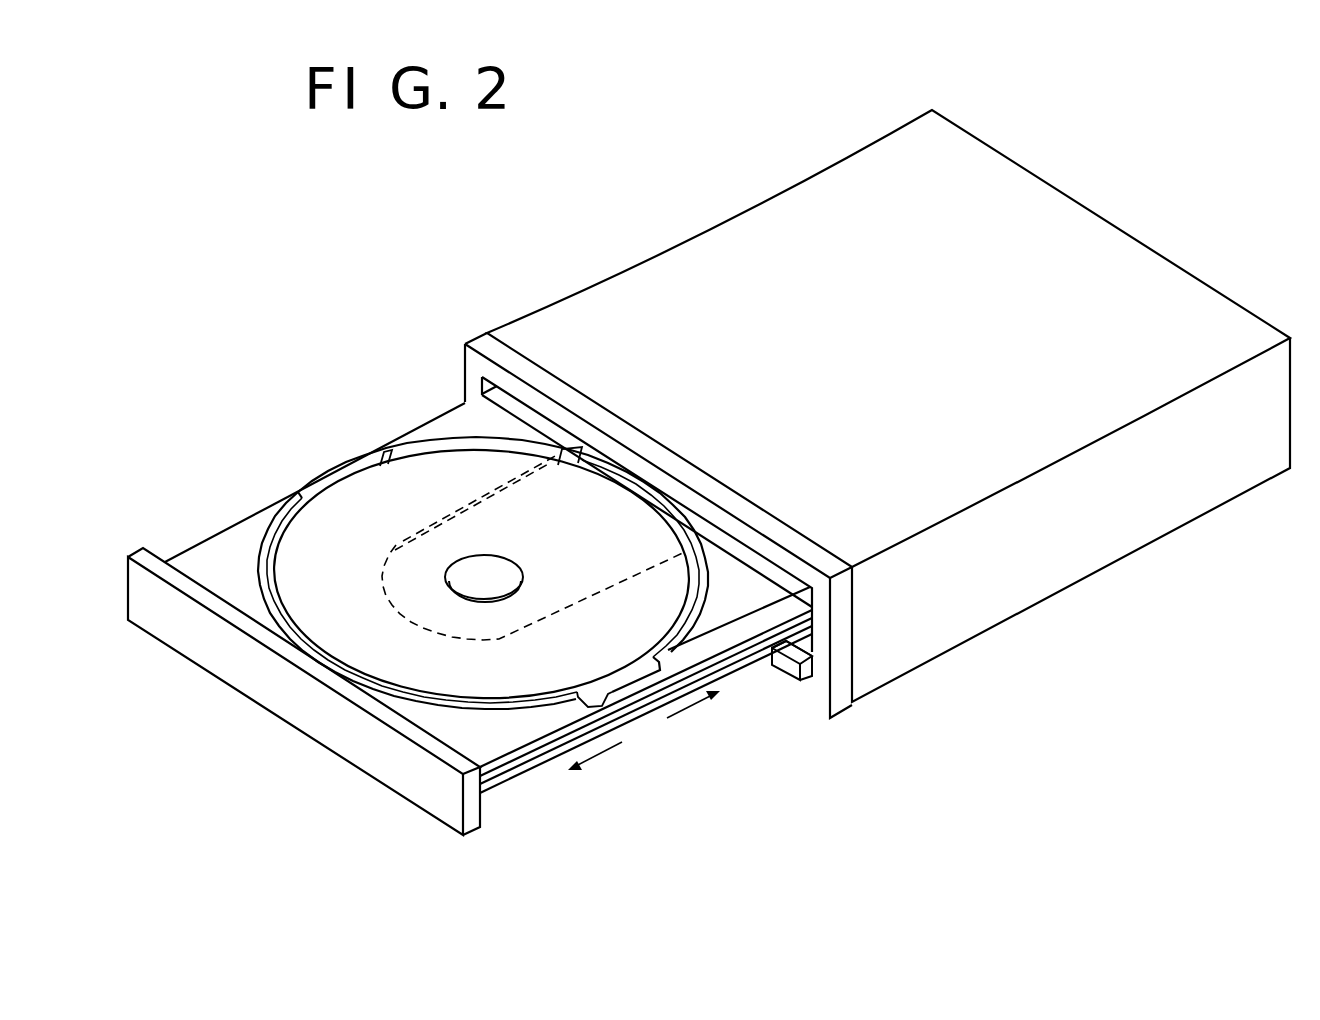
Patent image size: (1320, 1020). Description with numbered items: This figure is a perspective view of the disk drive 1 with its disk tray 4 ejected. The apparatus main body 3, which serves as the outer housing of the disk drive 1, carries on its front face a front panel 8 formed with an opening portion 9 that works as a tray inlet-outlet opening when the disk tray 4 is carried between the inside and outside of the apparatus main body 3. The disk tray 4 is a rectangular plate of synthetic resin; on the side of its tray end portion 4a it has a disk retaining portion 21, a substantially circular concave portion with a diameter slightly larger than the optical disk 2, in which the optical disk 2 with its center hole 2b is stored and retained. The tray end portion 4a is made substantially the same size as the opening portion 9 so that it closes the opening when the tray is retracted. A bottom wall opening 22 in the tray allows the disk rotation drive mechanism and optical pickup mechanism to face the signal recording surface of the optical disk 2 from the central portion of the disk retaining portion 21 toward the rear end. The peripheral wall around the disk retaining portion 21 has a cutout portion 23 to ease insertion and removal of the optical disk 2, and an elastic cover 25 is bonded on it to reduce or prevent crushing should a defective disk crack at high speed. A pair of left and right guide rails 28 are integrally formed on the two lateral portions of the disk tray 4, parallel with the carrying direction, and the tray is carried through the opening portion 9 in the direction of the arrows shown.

The disk drive 1 is at (448, 338).
The optical disk 2 is at (481, 556).
The center hole 2b is at (478, 562).
The apparatus main body 3 is at (1140, 262).
The disk tray 4 is at (460, 619).
The tray end portion 4a is at (232, 673).
The front panel 8 is at (782, 678).
The opening portion 9 is at (795, 641).
The disk retaining portion 21 is at (703, 600).
The bottom wall opening 22 is at (505, 470).
The cutout portion 23 is at (380, 458).
The elastic cover 25 is at (278, 518).
The guide rails 28 is at (523, 777).